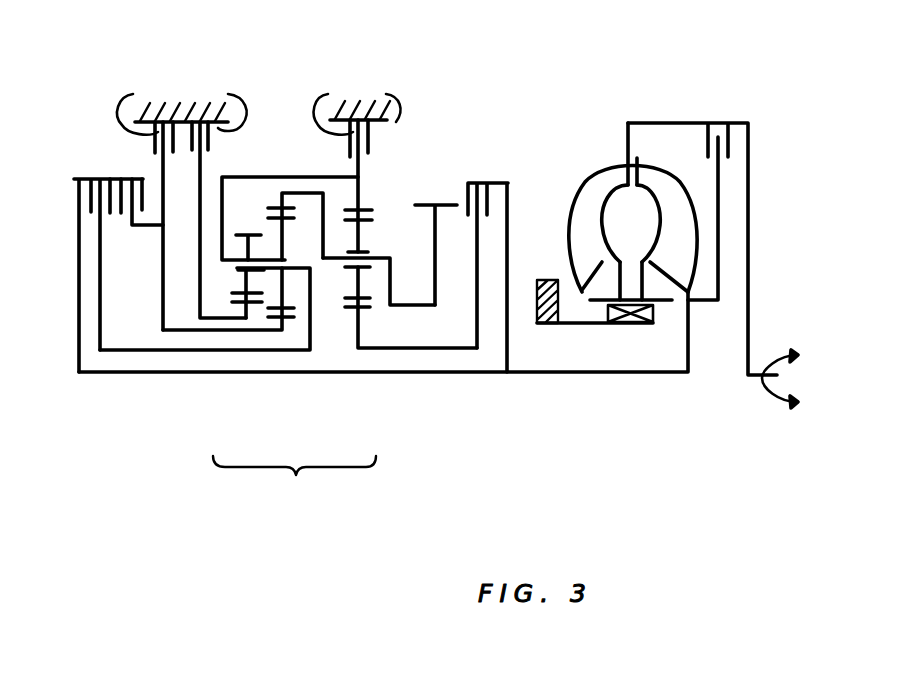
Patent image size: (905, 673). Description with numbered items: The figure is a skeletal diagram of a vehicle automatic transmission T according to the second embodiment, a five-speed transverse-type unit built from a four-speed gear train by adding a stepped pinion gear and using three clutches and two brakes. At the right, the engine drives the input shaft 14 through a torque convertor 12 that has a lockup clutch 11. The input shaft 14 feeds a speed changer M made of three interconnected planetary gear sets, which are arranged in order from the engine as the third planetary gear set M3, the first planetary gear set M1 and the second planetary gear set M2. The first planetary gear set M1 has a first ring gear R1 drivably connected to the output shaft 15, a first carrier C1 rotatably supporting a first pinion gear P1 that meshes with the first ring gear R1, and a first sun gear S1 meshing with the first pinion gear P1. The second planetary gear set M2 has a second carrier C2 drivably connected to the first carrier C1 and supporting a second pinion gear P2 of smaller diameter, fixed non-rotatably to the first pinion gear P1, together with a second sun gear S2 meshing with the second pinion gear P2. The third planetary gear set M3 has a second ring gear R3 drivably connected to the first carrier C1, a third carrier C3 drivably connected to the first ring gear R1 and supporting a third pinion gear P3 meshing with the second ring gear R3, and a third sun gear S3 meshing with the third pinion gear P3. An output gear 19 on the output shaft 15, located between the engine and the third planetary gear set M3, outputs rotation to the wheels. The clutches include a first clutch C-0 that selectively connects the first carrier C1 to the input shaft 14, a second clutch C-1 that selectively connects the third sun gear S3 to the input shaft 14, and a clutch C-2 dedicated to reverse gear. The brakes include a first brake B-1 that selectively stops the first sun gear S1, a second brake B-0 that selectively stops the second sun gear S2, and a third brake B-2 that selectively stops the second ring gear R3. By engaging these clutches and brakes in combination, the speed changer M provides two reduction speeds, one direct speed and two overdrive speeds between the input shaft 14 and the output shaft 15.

The automatic transmission T is at (460, 78).
The first brake B-1 is at (182, 202).
The second brake B-0 is at (217, 196).
The third brake B-2 is at (357, 162).
The first clutch C-0 is at (79, 197).
The reverse clutch C-2 is at (161, 180).
The second clutch C-1 is at (466, 186).
The first ring gear R1 is at (278, 190).
The first carrier C1 is at (313, 250).
The first pinion gear P1 is at (274, 205).
The second pinion gear P2 is at (241, 233).
The second carrier C2 is at (237, 269).
The second sun gear S2 is at (241, 306).
The first sun gear S1 is at (288, 322).
The second ring gear R3 is at (361, 206).
The third pinion gear P3 is at (365, 224).
The third carrier C3 is at (338, 264).
The third sun gear S3 is at (363, 318).
The output shaft 15 is at (414, 300).
The output gear 19 is at (443, 202).
The input shaft 14 is at (470, 375).
The torque convertor 12 is at (627, 140).
The lockup clutch 11 is at (712, 140).
The speed changer M is at (294, 441).
The first planetary gear set M1 is at (280, 378).
The second planetary gear set M2 is at (246, 376).
The third planetary gear set M3 is at (360, 378).